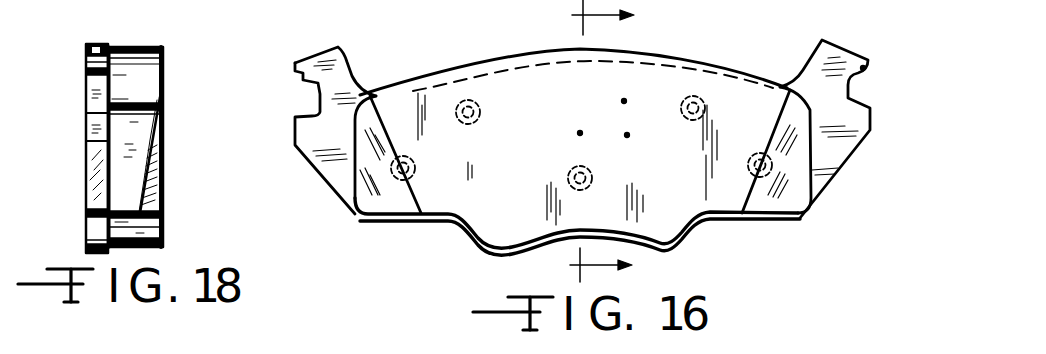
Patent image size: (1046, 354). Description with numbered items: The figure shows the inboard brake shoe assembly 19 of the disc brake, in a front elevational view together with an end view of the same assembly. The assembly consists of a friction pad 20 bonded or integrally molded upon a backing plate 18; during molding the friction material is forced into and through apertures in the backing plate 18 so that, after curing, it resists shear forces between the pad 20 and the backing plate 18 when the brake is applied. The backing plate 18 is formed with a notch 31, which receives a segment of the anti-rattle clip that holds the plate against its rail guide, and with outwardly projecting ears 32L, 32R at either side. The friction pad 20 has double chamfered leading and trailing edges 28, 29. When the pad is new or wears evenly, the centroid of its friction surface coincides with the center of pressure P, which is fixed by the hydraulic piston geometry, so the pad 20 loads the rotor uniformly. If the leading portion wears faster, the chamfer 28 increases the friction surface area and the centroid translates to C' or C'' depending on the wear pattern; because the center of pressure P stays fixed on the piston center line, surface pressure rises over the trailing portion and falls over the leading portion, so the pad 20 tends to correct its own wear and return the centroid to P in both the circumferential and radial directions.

In FIG. 18, the backing plate 18 is at (100, 45).
In FIG. 16, the backing plate 18 is at (834, 156).
In FIG. 16, the inboard brake shoe assembly 19 is at (424, 28).
In FIG. 18, the friction pad 20 is at (133, 76).
In FIG. 16, the friction pad 20 is at (712, 216).
In FIG. 16, the leading edge 28 is at (790, 216).
In FIG. 18, the trailing edge 29 is at (155, 195).
In FIG. 16, the trailing edge 29 is at (419, 215).
In FIG. 16, the notch 31 is at (865, 69).
In FIG. 16, the left ear 32L is at (308, 96).
In FIG. 16, the right ear 32R is at (853, 99).
In FIG. 16, the center of pressure P is at (578, 133).
In FIG. 16, the translated centroid C' is at (642, 136).
In FIG. 16, the translated centroid C'' is at (639, 91).